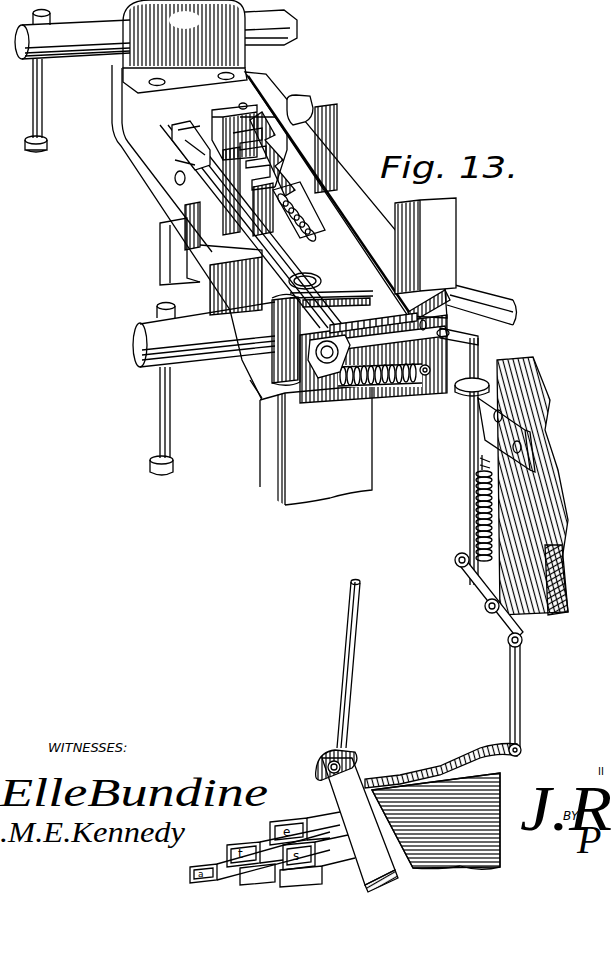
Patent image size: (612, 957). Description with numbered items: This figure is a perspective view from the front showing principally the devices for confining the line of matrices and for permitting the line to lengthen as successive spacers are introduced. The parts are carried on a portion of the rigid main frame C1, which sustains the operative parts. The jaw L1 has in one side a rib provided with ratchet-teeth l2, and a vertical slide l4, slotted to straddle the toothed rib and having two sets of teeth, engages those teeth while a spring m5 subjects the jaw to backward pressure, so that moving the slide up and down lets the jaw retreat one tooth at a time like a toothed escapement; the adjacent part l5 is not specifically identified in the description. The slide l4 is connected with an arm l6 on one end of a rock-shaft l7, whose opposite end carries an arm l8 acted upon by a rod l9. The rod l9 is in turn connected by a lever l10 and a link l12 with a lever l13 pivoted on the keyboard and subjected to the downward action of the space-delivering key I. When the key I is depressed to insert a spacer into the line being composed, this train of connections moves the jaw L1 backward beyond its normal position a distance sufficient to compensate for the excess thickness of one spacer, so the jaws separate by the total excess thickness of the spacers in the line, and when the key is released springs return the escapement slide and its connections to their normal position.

The bracket and hanging block C' C1 is at (247, 252).
The arm l6 is at (157, 130).
The rock-shaft l7 is at (263, 257).
The jaw L1 is at (272, 122).
The ratchet-teeth l2 is at (298, 125).
The spring m5 is at (305, 215).
The sleeve l5 is at (210, 156).
The vertical slide l4 is at (222, 135).
The arm l8 is at (352, 358).
The rod l9 is at (482, 350).
The lever l10 is at (485, 603).
The link l12 is at (522, 675).
The lever l13 is at (497, 757).
The space-key I is at (357, 736).